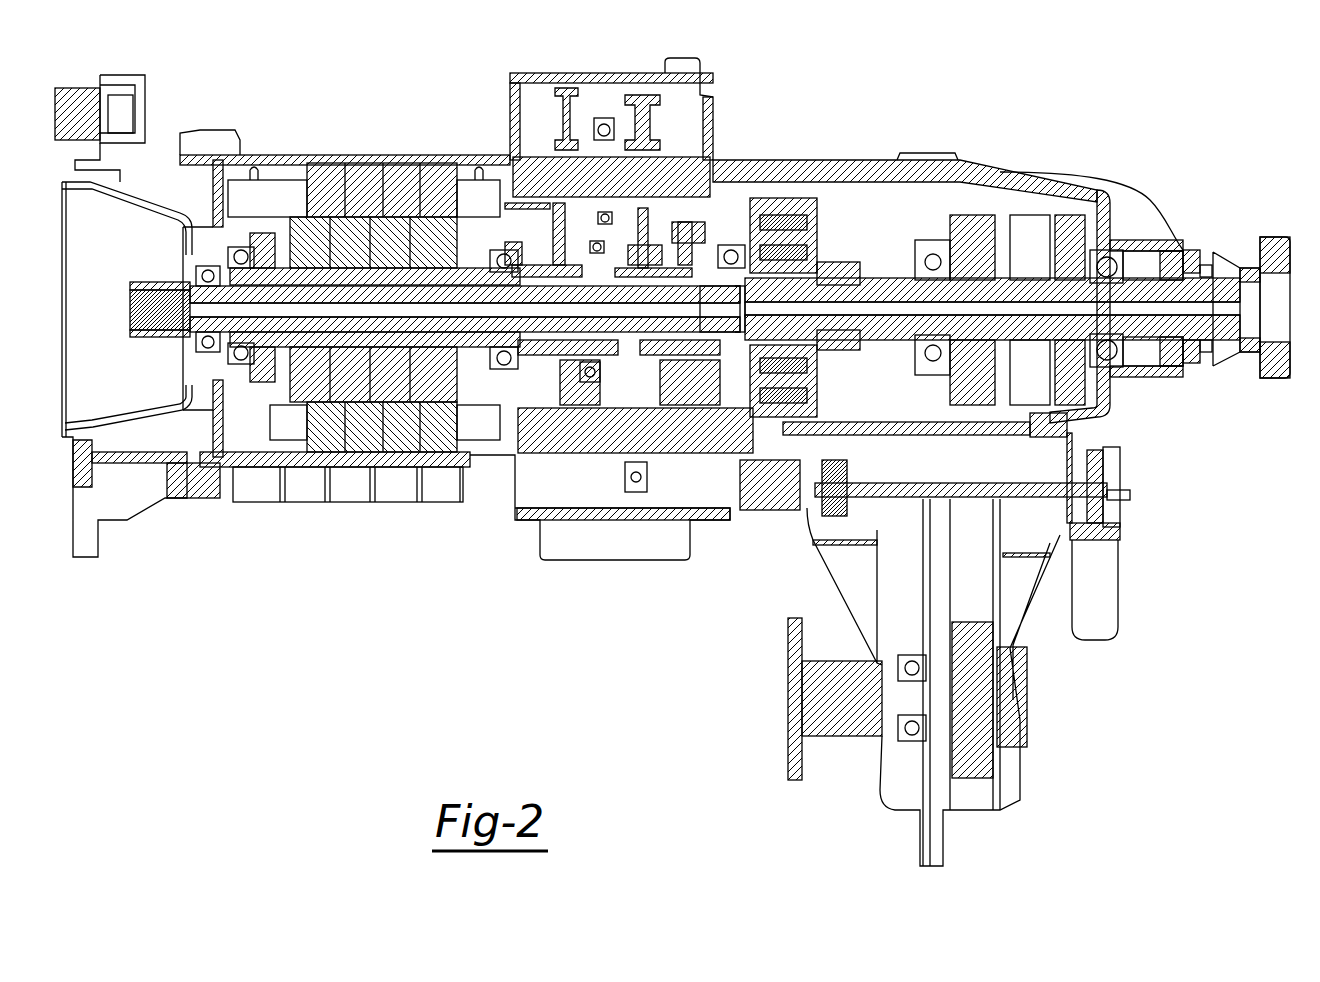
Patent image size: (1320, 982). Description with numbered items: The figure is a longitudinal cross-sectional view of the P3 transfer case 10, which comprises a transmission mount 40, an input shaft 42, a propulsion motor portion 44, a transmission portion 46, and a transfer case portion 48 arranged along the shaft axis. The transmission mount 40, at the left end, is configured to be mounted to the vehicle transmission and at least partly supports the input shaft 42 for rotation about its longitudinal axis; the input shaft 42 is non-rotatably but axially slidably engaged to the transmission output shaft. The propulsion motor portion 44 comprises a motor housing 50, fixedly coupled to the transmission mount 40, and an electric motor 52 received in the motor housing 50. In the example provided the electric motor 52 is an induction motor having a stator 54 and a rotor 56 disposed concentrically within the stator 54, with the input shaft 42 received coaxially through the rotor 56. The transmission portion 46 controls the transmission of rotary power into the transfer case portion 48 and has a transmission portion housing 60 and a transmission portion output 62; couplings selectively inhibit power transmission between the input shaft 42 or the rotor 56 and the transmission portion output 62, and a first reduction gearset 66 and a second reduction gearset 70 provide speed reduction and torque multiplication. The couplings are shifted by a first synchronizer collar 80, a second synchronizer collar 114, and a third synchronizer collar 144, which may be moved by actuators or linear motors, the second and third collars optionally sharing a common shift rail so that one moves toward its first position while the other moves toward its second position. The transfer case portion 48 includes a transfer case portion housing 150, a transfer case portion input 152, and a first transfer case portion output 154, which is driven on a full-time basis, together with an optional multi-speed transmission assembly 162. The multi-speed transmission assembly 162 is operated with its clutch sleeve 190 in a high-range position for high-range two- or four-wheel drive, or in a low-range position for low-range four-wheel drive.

The P3 transfer case 10 is at (190, 53).
The transmission mount 40 is at (148, 107).
The input shaft 42 is at (210, 325).
The propulsion motor portion 44 is at (342, 148).
The transmission portion 46 is at (647, 58).
The transfer case portion 48 is at (1002, 168).
The motor housing 50 is at (260, 488).
The electric motor 52 is at (308, 570).
The stator 54 is at (395, 430).
The rotor 56 is at (257, 273).
The transmission portion housing 60 is at (515, 125).
The transmission portion output 62 is at (737, 275).
The first reduction gearset 66 is at (545, 113).
The second reduction gearset 70 is at (548, 479).
The first synchronizer collar 80 is at (588, 380).
The second synchronizer collar 114 is at (603, 116).
The third synchronizer collar 144 is at (636, 492).
The transfer case portion housing 150 is at (1135, 215).
The transfer case portion input 152 is at (765, 342).
The first transfer case portion output 154 is at (1185, 312).
The multi-speed transmission assembly 162 is at (786, 190).
The clutch sleeve 190 is at (822, 280).